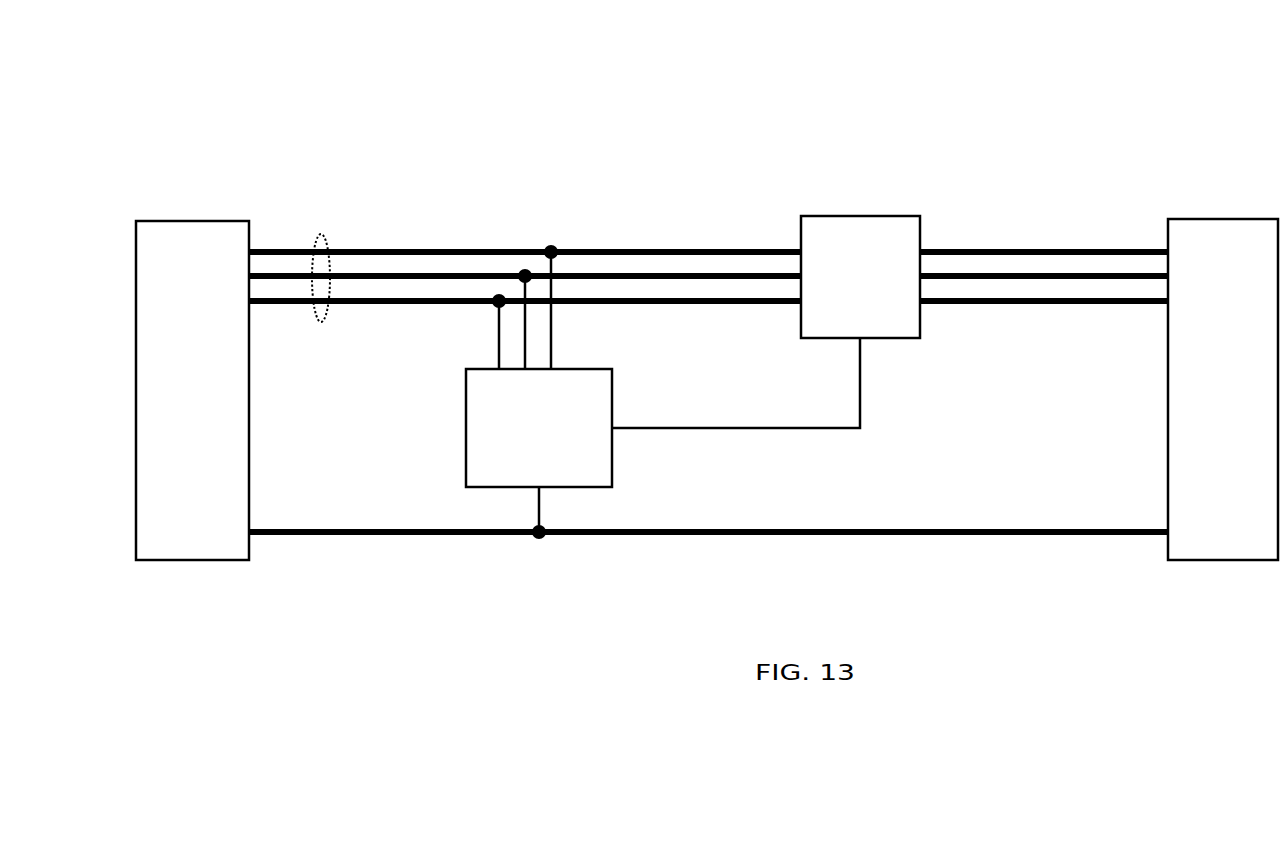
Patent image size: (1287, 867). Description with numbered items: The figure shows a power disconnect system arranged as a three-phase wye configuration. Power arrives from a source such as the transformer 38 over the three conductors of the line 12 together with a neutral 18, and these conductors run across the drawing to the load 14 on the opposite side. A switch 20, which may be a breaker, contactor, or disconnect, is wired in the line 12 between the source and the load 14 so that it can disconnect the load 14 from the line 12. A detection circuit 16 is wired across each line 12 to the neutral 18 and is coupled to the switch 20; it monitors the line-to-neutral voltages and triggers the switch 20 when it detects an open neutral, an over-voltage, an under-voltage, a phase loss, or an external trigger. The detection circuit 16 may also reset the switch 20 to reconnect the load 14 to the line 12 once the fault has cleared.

The transformer 38 is at (192, 331).
The load 14 is at (1201, 313).
The line 12 is at (708, 225).
The neutral 18 is at (708, 590).
The switch 20 is at (826, 233).
The detection circuit 16 is at (607, 392).